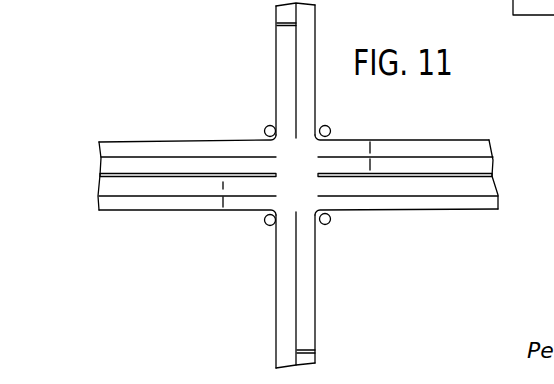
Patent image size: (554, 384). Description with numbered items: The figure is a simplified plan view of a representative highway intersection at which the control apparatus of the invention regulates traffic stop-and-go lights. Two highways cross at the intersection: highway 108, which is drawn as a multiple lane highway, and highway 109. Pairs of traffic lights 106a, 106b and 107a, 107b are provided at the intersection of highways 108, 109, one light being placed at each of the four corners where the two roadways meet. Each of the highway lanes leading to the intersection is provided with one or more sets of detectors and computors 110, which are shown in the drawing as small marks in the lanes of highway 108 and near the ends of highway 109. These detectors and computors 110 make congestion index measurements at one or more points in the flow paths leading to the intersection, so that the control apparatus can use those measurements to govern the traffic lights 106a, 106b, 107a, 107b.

The traffic light 106a is at (270, 226).
The traffic light 106b is at (329, 128).
The traffic light 107a is at (330, 222).
The traffic light 107b is at (265, 127).
The highway 108 is at (180, 122).
The highway 109 is at (308, 303).
The detectors and computors 110 is at (292, 24).